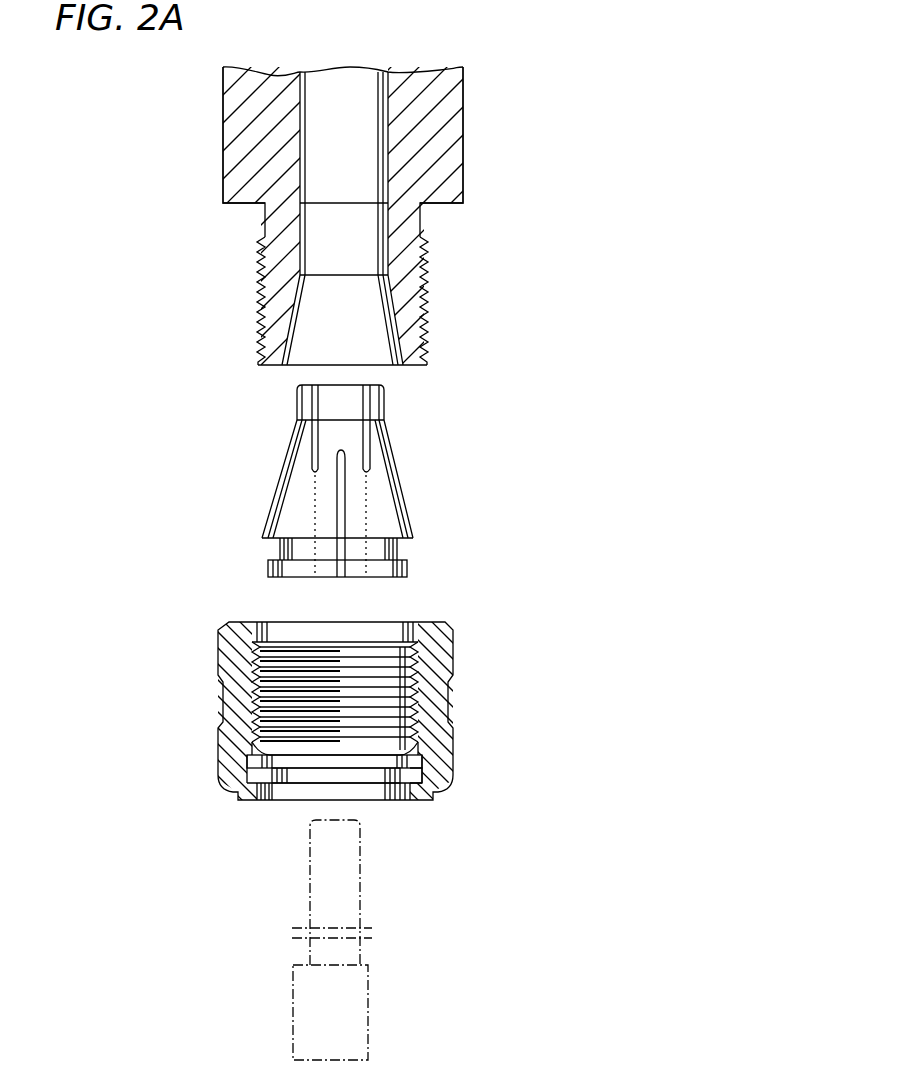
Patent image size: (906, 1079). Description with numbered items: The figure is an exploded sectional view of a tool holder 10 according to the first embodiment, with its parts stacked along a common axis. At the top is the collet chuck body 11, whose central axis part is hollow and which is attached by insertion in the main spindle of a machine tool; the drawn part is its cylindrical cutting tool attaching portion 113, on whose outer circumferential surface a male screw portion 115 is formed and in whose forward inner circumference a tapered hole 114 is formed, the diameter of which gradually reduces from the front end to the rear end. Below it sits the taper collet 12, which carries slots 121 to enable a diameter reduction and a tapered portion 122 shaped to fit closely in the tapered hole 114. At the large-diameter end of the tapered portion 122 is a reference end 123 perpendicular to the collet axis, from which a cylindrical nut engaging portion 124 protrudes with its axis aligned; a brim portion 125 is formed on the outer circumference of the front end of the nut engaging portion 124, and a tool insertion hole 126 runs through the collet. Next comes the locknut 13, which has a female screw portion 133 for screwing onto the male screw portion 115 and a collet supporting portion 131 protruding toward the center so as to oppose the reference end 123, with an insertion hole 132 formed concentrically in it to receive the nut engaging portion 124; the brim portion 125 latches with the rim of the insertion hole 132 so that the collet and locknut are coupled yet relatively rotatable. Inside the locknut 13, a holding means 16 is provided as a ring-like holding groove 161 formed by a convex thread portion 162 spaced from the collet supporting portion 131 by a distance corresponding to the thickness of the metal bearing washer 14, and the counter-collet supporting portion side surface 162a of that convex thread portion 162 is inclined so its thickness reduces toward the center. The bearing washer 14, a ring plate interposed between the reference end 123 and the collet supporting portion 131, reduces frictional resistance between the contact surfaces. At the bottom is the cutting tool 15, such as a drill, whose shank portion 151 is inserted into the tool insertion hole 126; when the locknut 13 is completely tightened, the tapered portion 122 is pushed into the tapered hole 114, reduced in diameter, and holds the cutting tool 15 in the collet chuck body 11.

The tool holder 10 is at (198, 151).
The collet chuck body 11 is at (467, 91).
The cutting tool attaching portion 113 is at (465, 165).
The male screw portion 115 is at (430, 262).
The tapered hole 114 is at (400, 338).
The taper collet 12 is at (395, 431).
The slots 121 is at (382, 504).
The tapered portion 122 is at (270, 502).
The reference end 123 is at (400, 540).
The nut engaging portion 124 is at (283, 548).
The brim portion 125 is at (385, 578).
The tool insertion hole 126 is at (312, 490).
The locknut 13 is at (208, 639).
The female screw portion 133 is at (415, 700).
The counter-collet supporting portion side surface 162a is at (250, 755).
The convex thread portion 162 is at (240, 755).
The holding means 16 is at (430, 755).
The holding groove 161 is at (433, 790).
The bearing washer 14 is at (410, 748).
The insertion hole 132 is at (275, 800).
The collet supporting portion 131 is at (400, 800).
The cutting tool 15 is at (372, 995).
The shank portion 151 is at (360, 905).